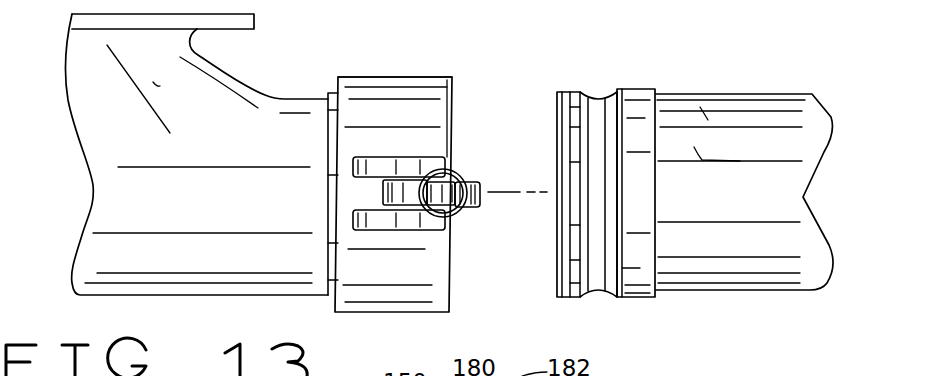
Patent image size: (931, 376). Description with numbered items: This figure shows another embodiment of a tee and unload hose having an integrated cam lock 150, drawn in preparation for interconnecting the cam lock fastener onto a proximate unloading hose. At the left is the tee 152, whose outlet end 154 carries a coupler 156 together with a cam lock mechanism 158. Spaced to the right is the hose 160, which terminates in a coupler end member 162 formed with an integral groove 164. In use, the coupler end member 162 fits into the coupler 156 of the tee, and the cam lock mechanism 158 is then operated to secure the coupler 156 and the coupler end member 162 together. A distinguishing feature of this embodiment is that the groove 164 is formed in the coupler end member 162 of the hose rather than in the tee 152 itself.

The tee and unload hose having an integrated cam lock 150 is at (463, 75).
The tee 152 is at (254, 78).
The outlet end 154 is at (453, 137).
The coupler 156 is at (400, 105).
The cam lock mechanism 158 is at (457, 228).
The hose 160 is at (728, 137).
The coupler end member 162 is at (637, 90).
The groove 164 is at (602, 100).